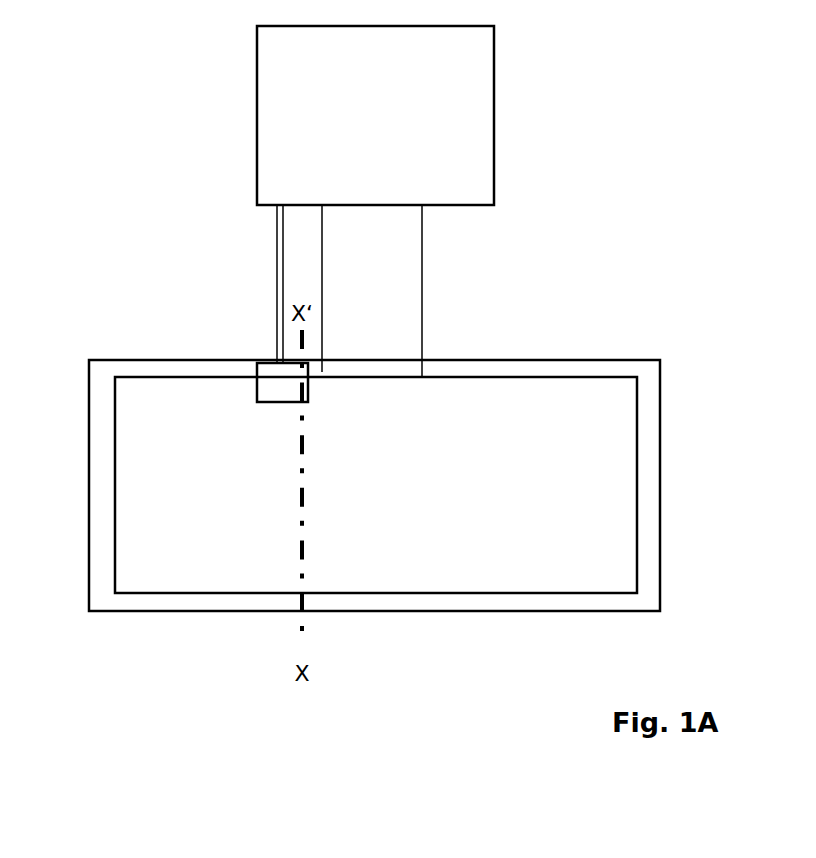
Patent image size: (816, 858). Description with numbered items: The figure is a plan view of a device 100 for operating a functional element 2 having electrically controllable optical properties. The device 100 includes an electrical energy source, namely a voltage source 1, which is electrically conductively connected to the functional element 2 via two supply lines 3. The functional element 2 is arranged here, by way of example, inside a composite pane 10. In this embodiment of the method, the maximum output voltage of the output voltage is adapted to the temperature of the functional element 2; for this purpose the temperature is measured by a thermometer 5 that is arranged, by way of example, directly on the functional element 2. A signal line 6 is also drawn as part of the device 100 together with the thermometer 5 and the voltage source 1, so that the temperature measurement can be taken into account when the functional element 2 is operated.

The device 100 is at (137, 85).
The voltage source 1 is at (364, 148).
The functional element having electrically controllable optical properties 2 is at (160, 378).
The supply line 3 is at (324, 312).
The thermometer 5 is at (268, 362).
The signal line 6 is at (277, 285).
The composite pane 10 is at (552, 358).